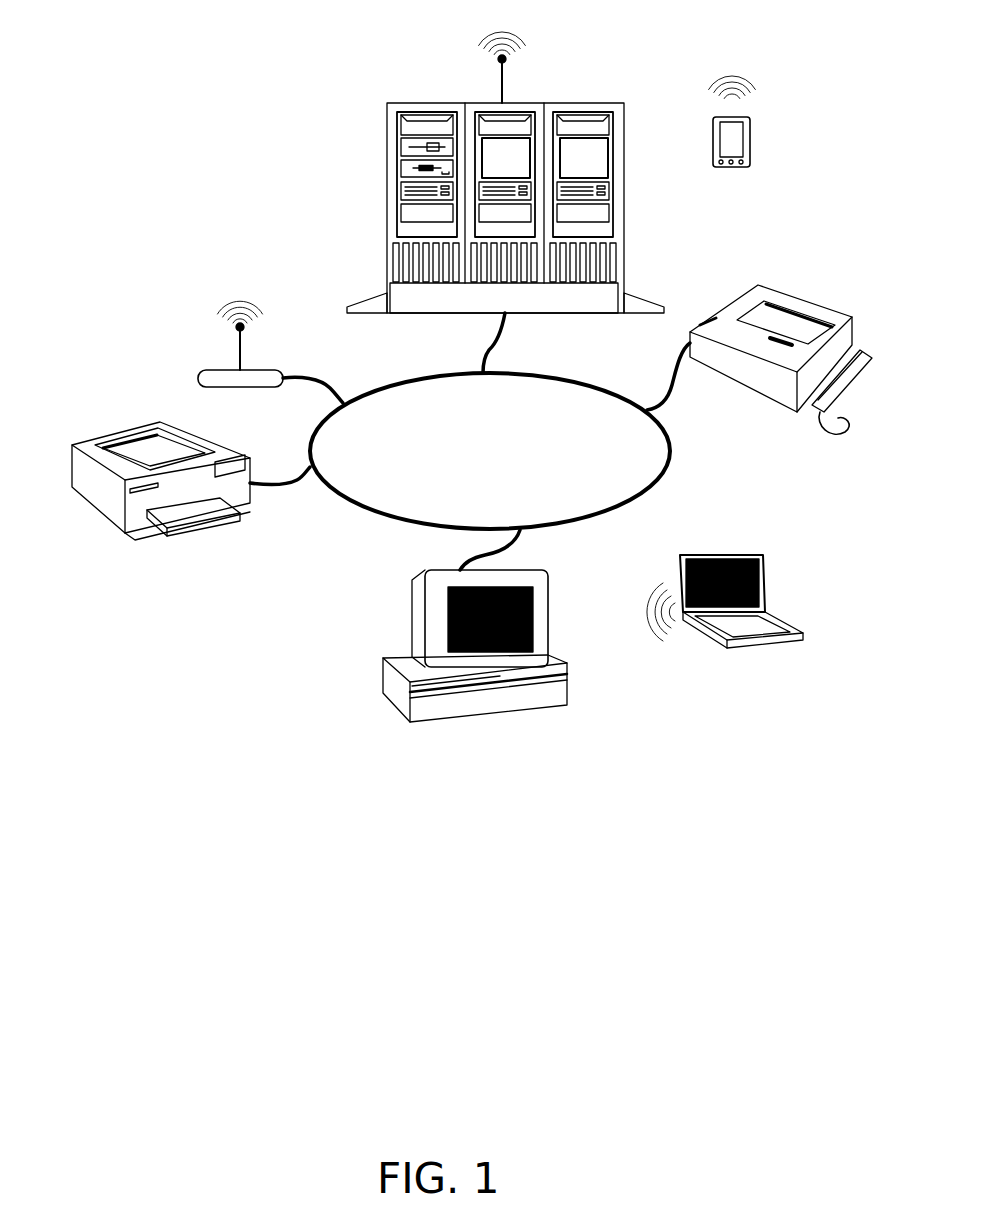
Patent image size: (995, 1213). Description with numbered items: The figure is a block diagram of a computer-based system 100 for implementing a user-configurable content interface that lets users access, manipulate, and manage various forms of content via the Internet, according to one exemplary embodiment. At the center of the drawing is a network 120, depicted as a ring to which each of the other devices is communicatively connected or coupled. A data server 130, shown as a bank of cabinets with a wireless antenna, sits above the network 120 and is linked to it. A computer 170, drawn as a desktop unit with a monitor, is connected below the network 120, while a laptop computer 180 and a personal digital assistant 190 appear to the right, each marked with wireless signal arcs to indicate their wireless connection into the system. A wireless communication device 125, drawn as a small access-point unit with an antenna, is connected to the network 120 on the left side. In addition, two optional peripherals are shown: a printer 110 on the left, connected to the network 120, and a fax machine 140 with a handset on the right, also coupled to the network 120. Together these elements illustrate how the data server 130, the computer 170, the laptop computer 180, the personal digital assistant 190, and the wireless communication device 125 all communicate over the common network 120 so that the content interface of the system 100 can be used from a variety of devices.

The computer-based system 100 is at (256, 46).
The printer 110 is at (80, 442).
The network 120 is at (547, 373).
The wireless communication device 125 is at (207, 370).
The data server 130 is at (411, 103).
The fax machine 140 is at (758, 288).
The computer 170 is at (397, 653).
The laptop computer 180 is at (785, 620).
The personal digital assistant (PDA) 190 is at (748, 165).